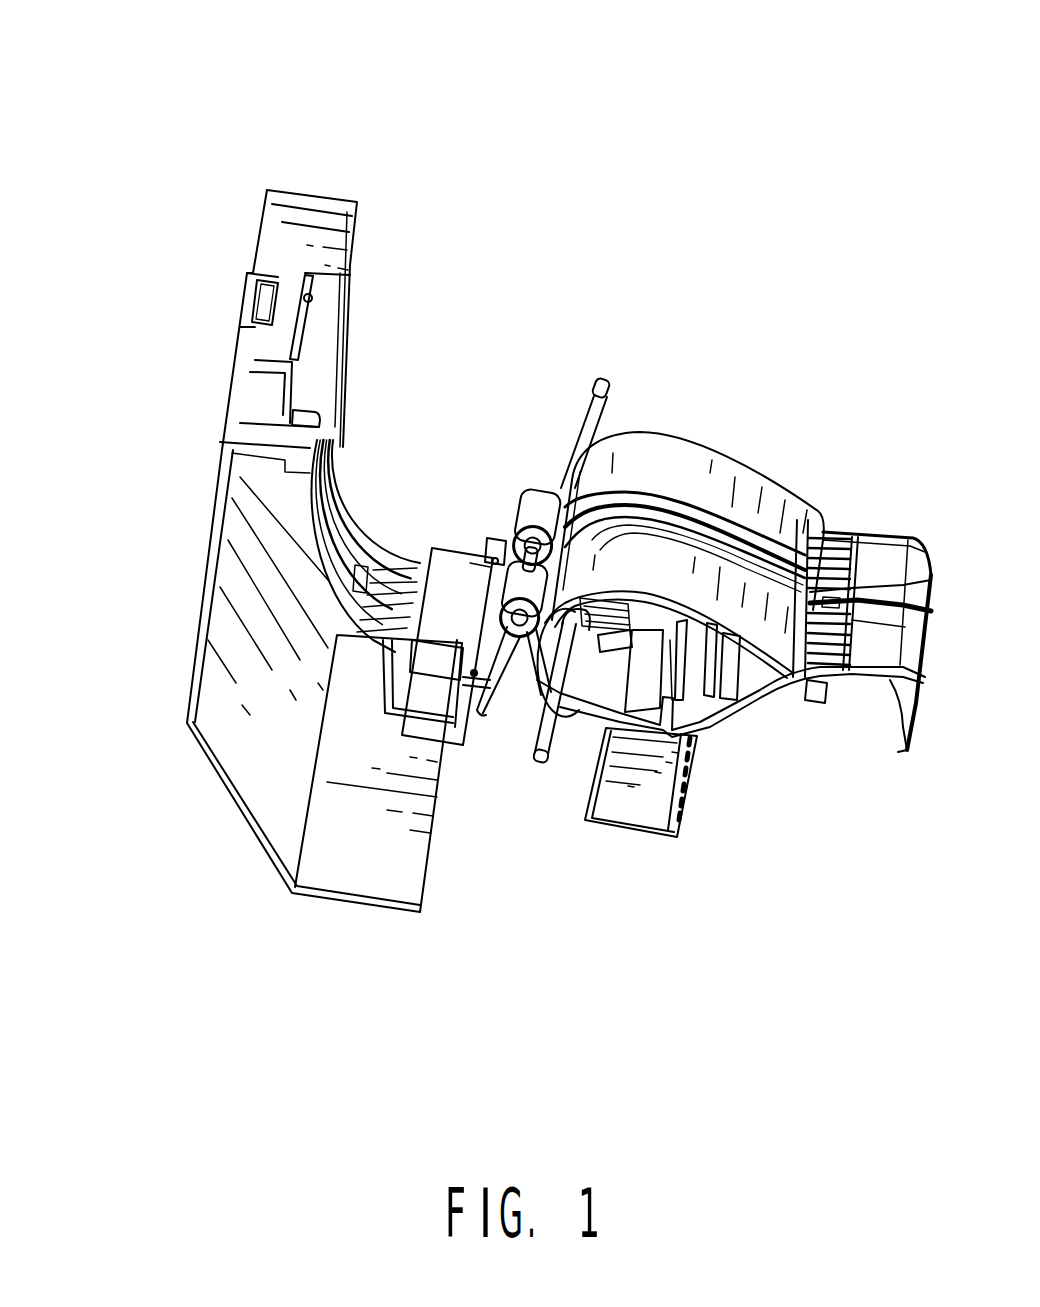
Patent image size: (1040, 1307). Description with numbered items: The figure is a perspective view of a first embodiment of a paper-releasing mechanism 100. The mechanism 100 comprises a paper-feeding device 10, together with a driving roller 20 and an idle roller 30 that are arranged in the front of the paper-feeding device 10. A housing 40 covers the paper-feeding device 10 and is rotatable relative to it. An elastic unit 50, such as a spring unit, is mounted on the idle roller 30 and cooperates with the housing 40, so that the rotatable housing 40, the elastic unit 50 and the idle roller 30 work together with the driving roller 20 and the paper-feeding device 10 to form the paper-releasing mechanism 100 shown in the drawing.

The paper-releasing mechanism 100 is at (118, 50).
The paper-feeding device 10 is at (635, 432).
The driving roller 20 is at (580, 725).
The idle roller 30 is at (548, 492).
The housing 40 is at (335, 198).
The elastic unit 50 is at (490, 543).